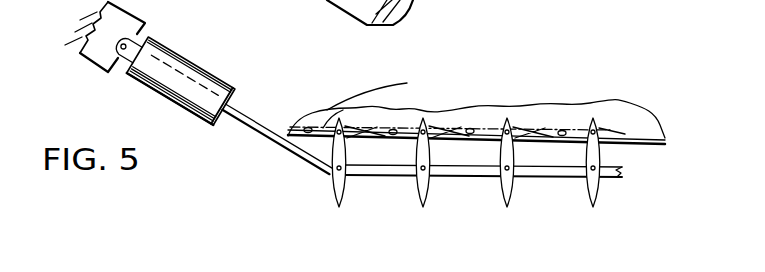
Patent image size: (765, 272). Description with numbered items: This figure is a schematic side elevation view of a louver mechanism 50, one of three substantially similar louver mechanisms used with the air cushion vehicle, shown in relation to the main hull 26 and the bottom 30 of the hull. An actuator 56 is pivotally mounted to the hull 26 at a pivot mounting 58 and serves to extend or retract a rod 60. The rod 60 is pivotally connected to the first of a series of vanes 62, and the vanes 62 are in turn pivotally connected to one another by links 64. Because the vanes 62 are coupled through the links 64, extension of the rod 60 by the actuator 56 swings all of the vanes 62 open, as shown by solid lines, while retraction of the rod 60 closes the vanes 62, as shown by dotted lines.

The main hull 26 is at (98, 16).
The bottom of the hull 30 is at (325, 0).
The louver mechanism 50 is at (267, 167).
The actuator 56 is at (177, 78).
The pivot mounting 58 is at (121, 50).
The rod 60 is at (248, 118).
The vanes 62 is at (380, 128).
The links 64 is at (401, 172).